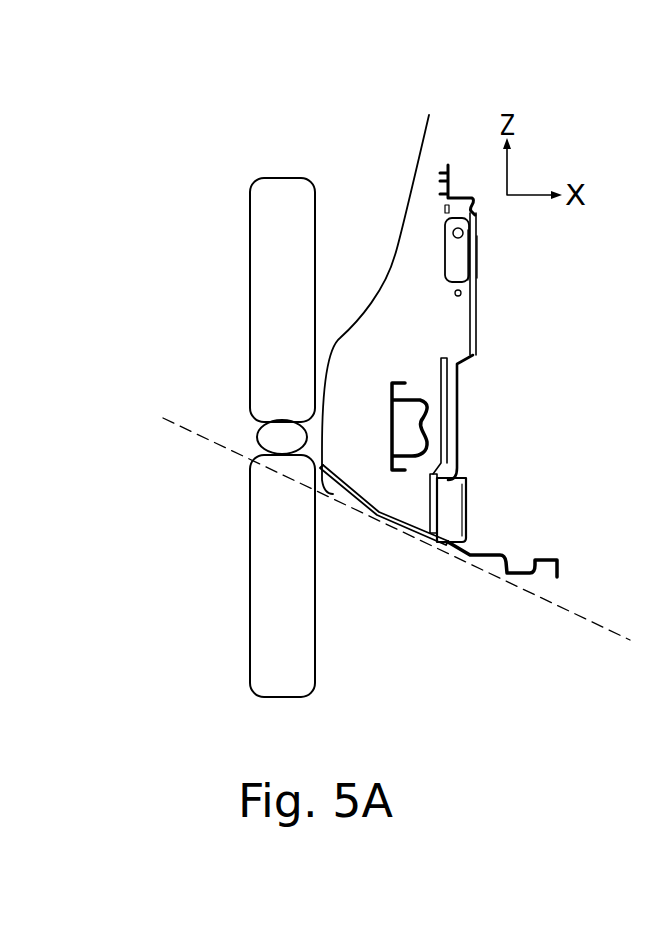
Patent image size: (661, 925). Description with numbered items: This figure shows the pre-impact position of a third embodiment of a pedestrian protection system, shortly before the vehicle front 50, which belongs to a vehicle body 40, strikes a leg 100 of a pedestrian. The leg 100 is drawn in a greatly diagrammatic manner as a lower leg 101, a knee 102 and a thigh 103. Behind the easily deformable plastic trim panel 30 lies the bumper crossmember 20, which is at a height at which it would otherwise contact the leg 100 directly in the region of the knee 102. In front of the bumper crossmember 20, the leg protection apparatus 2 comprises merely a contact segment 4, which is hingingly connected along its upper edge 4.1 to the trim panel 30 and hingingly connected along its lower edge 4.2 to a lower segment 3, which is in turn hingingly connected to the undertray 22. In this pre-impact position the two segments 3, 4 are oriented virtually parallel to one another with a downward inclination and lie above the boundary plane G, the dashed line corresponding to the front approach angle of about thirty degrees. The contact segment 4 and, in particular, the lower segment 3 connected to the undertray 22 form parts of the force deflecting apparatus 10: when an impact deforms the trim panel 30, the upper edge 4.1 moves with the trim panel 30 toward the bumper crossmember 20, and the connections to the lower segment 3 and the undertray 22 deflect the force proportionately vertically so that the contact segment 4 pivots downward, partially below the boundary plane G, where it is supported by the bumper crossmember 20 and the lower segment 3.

The leg protection apparatus 2 is at (391, 537).
The lower segment 3 is at (420, 540).
The contact segment 4 is at (384, 539).
The upper edge 4.1 is at (323, 463).
The lower edge 4.2 is at (356, 596).
The force deflecting apparatus 10 is at (416, 470).
The bumper crossmember 20 is at (419, 398).
The undertray 22 is at (490, 578).
The trim panel 30 is at (405, 203).
The vehicle body 40 is at (466, 100).
The vehicle front 50 is at (353, 178).
The leg 100 is at (241, 434).
The lower leg 101 is at (307, 587).
The knee 102 is at (257, 433).
The thigh 103 is at (307, 313).
The boundary plane G is at (533, 598).